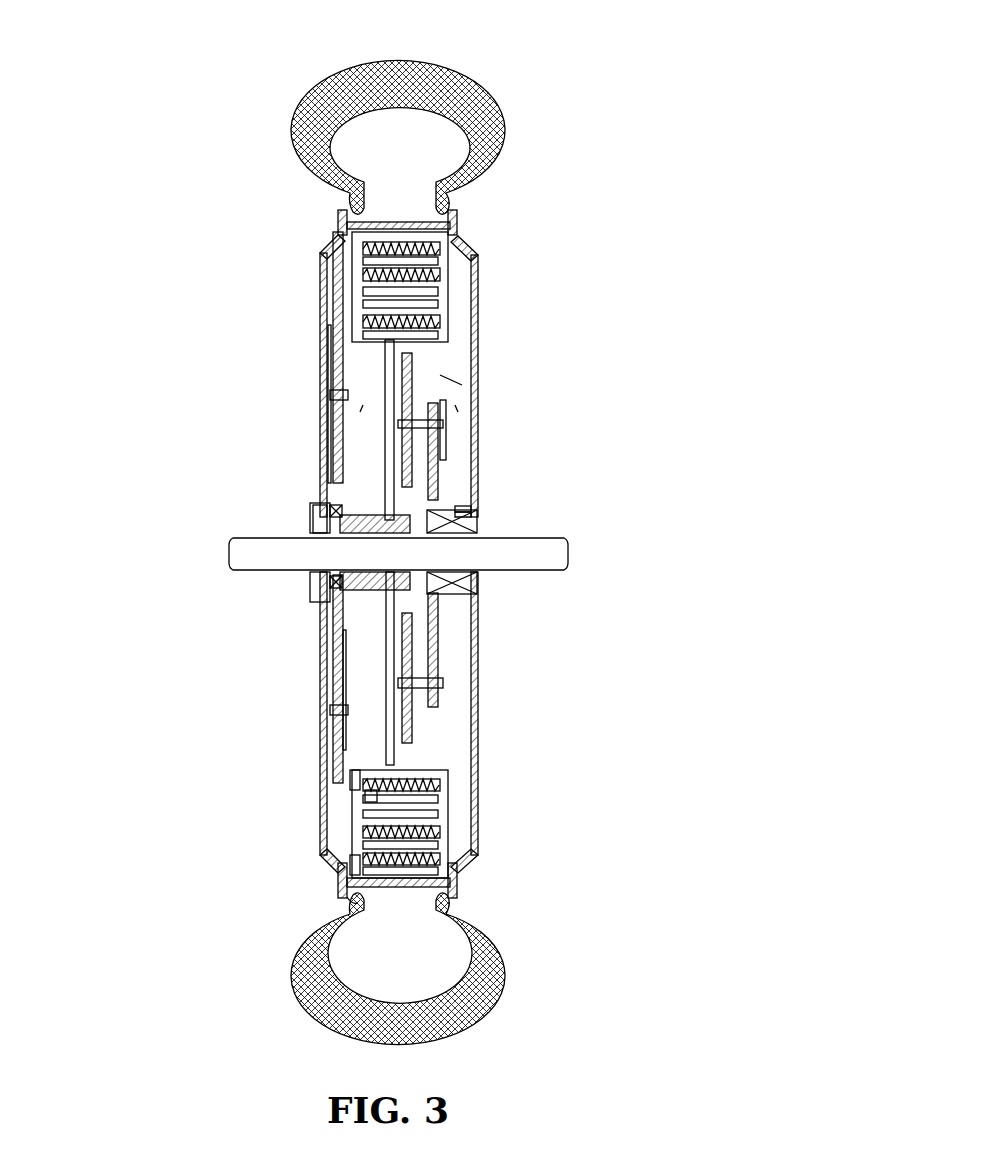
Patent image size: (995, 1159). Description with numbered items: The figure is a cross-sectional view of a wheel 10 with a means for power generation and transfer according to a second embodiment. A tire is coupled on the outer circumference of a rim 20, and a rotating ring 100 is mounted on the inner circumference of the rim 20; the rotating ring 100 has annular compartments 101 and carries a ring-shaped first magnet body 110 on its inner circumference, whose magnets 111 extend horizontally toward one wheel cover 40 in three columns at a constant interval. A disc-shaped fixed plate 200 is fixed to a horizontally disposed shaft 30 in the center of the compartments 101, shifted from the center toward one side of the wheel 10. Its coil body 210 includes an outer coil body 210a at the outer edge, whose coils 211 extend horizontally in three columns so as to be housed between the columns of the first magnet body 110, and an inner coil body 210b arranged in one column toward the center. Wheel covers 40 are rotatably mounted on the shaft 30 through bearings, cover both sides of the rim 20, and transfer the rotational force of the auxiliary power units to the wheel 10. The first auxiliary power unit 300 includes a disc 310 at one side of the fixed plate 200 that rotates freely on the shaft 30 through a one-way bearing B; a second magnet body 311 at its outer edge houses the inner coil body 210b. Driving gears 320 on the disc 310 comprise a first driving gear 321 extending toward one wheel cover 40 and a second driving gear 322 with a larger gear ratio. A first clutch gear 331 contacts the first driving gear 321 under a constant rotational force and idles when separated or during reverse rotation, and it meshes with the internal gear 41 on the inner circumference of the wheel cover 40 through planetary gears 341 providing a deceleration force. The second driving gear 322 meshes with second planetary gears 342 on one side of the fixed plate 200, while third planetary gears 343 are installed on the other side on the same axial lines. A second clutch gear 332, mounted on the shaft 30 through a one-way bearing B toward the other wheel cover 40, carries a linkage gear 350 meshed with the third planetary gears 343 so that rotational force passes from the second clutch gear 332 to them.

The wheel 10 is at (455, 88).
The rim 20 is at (403, 222).
The rotating ring 100 is at (335, 236).
The wheel cover 40 is at (327, 290).
The internal gear 41 is at (340, 300).
The planetary gear 341 is at (331, 327).
The first auxiliary power unit 300 is at (362, 373).
The second planetary gear 342 is at (413, 353).
The compartment 101 is at (360, 412).
The third planetary gear 343 is at (440, 437).
The linkage gear 350 is at (440, 462).
The second driving gear 322 is at (445, 487).
The driving gear 320 is at (392, 455).
The first driving gear 321 is at (343, 470).
The first clutch gear 331 is at (345, 500).
The second clutch gear 332 is at (468, 512).
The shaft 30 is at (255, 560).
The one-way bearing B is at (345, 590).
The fixed plate 200 is at (440, 628).
The disc 310 is at (383, 682).
The second magnet body 311 is at (415, 788).
The coil body 210 is at (450, 812).
The inner coil body 210b is at (352, 782).
The outer coil body 210a is at (352, 862).
The coil 211 is at (352, 905).
The first magnet body 110 is at (470, 848).
The magnet 111 is at (448, 903).